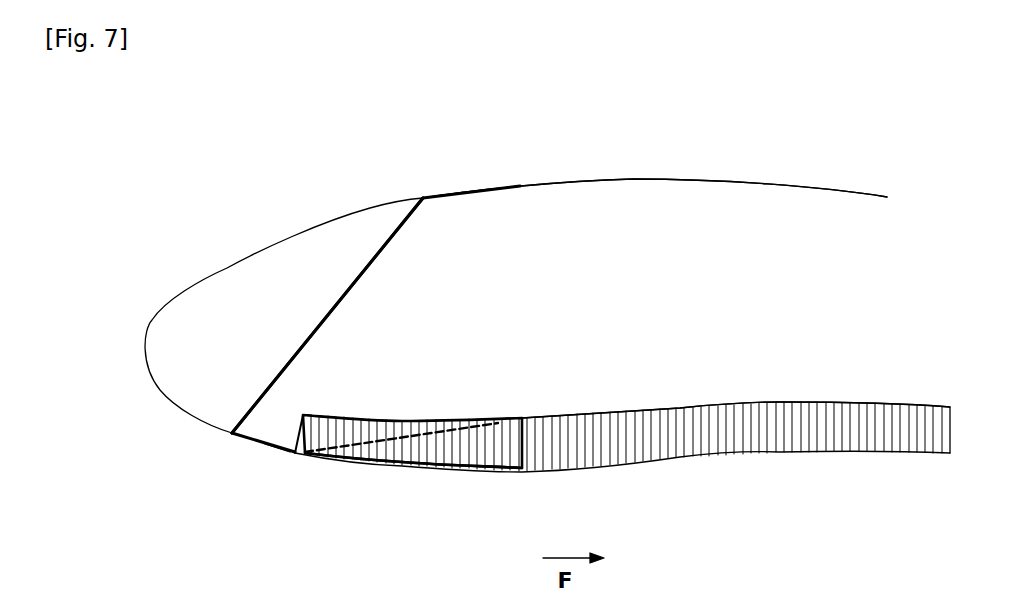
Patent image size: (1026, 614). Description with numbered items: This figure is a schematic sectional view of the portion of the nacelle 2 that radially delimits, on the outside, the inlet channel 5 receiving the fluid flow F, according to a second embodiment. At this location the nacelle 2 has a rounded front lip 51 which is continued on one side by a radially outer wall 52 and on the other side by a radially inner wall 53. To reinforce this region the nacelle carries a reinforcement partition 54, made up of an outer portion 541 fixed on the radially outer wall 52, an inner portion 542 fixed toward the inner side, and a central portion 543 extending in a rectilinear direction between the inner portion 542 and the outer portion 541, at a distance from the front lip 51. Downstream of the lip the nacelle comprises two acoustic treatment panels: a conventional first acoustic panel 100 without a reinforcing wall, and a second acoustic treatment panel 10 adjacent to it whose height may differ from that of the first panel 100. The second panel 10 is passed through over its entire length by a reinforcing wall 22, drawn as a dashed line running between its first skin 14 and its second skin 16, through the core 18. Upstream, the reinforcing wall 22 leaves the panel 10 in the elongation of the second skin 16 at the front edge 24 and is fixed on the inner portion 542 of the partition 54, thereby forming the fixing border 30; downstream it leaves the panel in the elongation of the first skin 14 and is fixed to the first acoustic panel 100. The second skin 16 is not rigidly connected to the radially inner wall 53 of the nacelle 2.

The nacelle 2 is at (835, 188).
The inlet channel 5 is at (252, 575).
The second acoustic treatment panel 10 is at (338, 415).
The first skin 14 is at (428, 420).
The second skin 16 is at (395, 465).
The core 18 is at (488, 438).
The reinforcing wall 22 is at (402, 420).
The front edge of spar assembly 24 is at (295, 436).
The fixing border 30 is at (278, 452).
The rounded front lip 51 is at (177, 297).
The radially outer wall 52 is at (652, 178).
The radially inner wall 53 is at (453, 472).
The reinforcement partition 54 is at (379, 252).
The first acoustic panel 100 is at (925, 405).
The outer portion 541 is at (472, 190).
The inner portion 542 is at (247, 440).
The central portion 543 is at (335, 298).